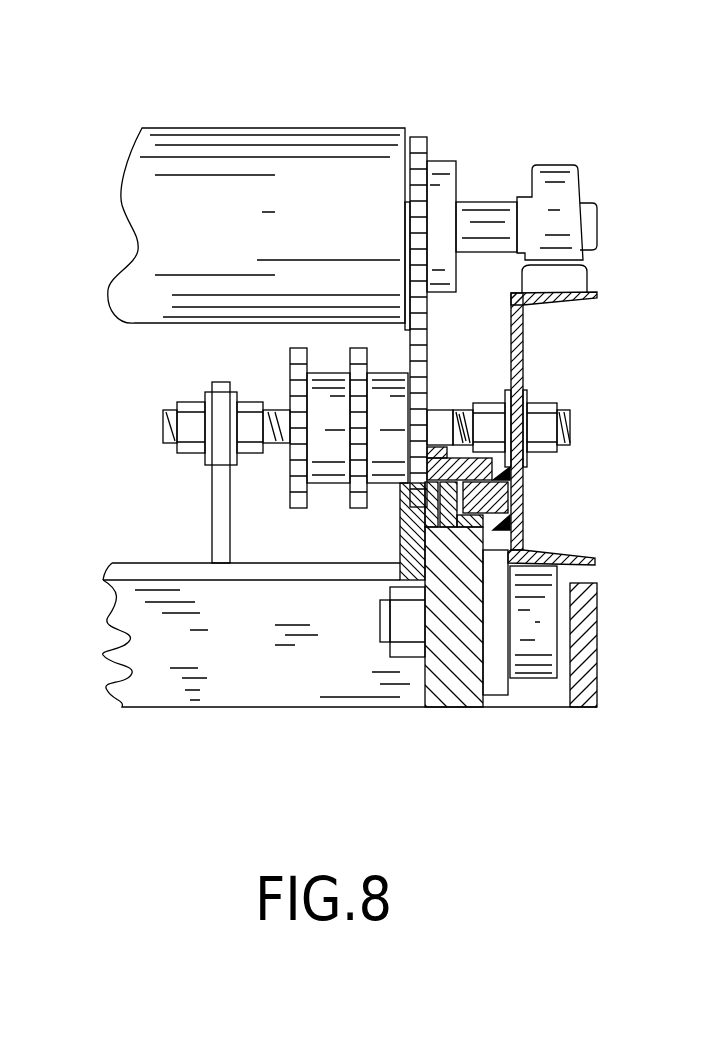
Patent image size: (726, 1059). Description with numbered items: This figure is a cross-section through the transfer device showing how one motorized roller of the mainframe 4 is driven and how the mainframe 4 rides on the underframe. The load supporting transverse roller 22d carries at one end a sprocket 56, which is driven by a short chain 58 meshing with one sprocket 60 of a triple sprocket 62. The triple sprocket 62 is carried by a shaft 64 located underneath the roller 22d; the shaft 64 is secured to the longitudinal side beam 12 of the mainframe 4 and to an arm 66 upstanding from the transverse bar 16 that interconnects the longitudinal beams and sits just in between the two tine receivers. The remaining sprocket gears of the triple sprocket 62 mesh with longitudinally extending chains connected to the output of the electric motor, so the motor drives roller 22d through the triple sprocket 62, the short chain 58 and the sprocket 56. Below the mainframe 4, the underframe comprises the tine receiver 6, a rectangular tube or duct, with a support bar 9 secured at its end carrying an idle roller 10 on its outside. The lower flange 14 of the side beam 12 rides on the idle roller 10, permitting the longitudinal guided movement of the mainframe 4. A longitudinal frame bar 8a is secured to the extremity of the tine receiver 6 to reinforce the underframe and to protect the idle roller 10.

The roller 22d is at (293, 168).
The sprocket 56 is at (427, 150).
The short chain 58 is at (428, 343).
The mainframe 4 is at (612, 292).
The longitudinal side beam 12 is at (523, 342).
The lower flange 14 is at (557, 555).
The sprocket 60 is at (428, 392).
The shaft 64 is at (445, 417).
The triple sprocket 62 is at (332, 482).
The arm 66 is at (213, 530).
The transverse bar 16 is at (157, 573).
The tine receiver 6 is at (280, 695).
The support bar 9 is at (457, 707).
The idle roller 10 is at (535, 673).
The longitudinal frame bar 8a is at (592, 628).